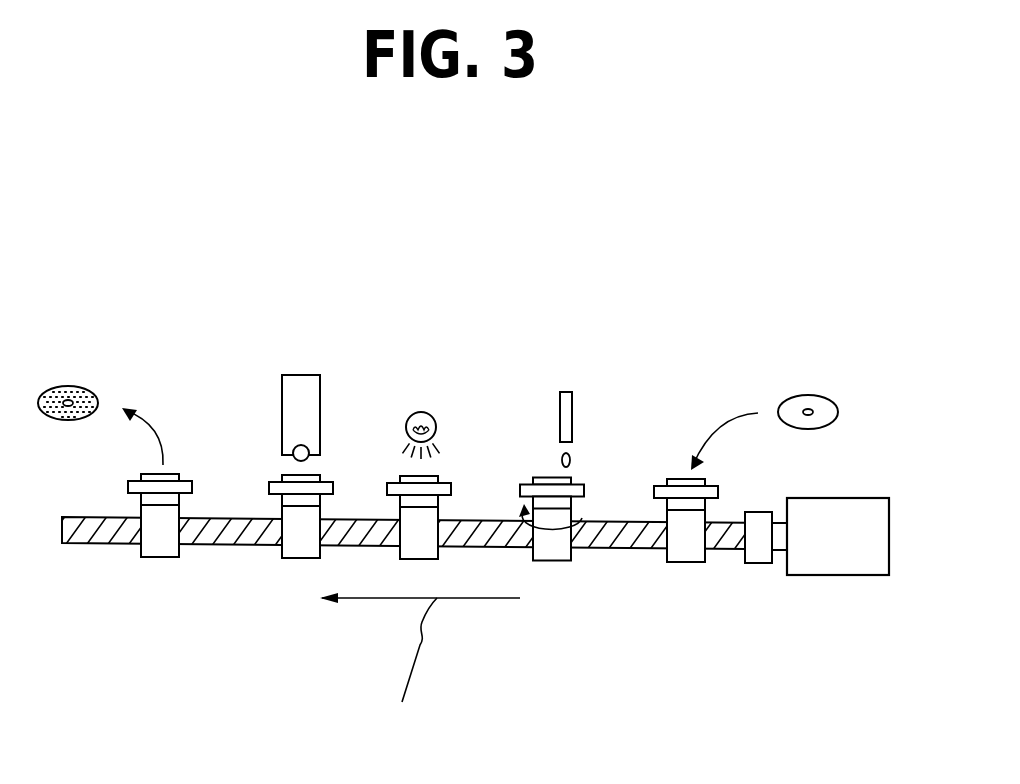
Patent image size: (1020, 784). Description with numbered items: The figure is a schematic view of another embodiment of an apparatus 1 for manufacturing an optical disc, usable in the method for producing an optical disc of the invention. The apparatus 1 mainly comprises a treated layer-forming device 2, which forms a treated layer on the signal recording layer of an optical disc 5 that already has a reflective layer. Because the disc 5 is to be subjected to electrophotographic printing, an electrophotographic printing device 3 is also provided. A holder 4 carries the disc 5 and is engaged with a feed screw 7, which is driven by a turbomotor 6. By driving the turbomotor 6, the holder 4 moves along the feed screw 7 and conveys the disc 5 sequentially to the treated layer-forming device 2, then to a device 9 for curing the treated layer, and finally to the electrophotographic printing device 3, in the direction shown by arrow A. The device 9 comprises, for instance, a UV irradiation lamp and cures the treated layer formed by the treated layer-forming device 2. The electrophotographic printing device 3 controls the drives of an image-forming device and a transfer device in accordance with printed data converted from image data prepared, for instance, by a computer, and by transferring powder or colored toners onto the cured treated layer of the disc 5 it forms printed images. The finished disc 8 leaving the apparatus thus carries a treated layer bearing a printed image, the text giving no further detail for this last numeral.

The apparatus for manufacturing an optical disc 1 is at (690, 312).
The treated layer-forming device 2 is at (573, 397).
The electrophotographic printing device 3 is at (302, 382).
The holder 4 is at (687, 555).
The optical disc 5 is at (815, 398).
The turbomotor 6 is at (857, 510).
The feed screw 7 is at (622, 540).
The coated optical disk 8 is at (82, 388).
The device for curing the treated layer 9 is at (422, 415).